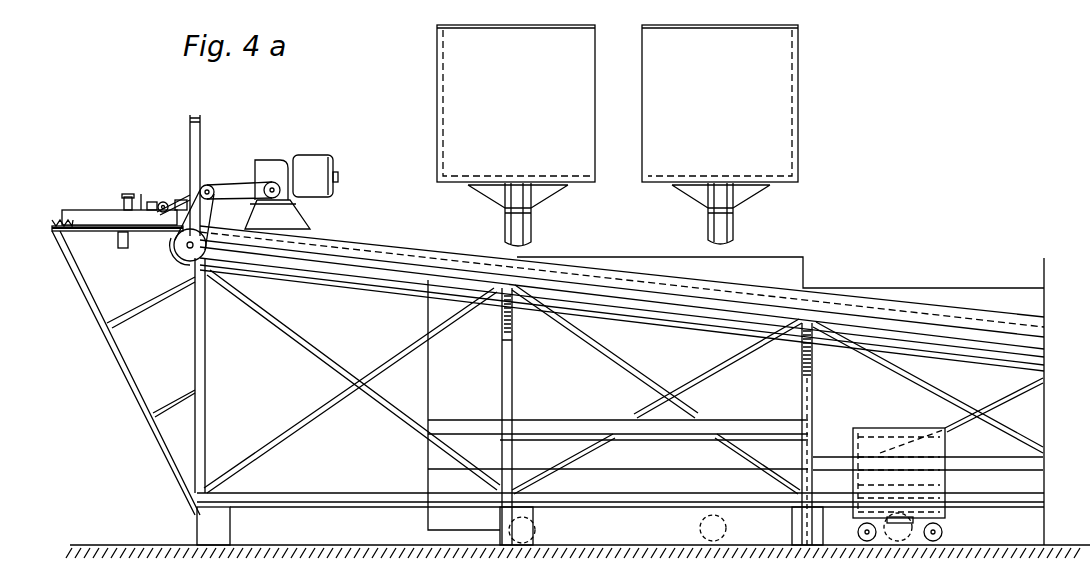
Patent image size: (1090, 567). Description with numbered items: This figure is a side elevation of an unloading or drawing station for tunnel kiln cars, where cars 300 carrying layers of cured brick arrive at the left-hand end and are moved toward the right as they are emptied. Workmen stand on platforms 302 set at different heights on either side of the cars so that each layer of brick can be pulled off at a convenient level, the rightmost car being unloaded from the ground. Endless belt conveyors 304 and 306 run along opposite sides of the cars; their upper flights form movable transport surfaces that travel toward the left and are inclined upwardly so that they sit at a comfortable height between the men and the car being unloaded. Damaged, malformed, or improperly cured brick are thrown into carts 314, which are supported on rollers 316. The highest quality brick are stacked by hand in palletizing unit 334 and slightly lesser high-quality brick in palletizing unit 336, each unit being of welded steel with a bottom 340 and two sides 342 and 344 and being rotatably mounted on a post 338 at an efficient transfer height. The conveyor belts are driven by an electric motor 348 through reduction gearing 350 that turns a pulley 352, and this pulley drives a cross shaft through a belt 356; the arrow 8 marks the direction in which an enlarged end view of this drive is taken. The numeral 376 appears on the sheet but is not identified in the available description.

The arrow 8 is at (67, 372).
The tunnel kiln car 300 is at (640, 533).
The platform 302 is at (437, 432).
The conveyor 304 is at (1069, 562).
The conveyor 306 is at (377, 249).
The cart 314 is at (946, 476).
The roller 316 is at (942, 526).
The palletizing unit 334 is at (437, 87).
The palletizing unit 336 is at (800, 86).
The post 338 is at (531, 232).
The bottom 340 is at (541, 175).
The side 342 is at (440, 46).
The side 344 is at (535, 76).
The electric motor 348 is at (312, 156).
The reduction gearing 350 is at (267, 160).
The pulley 352 is at (297, 200).
The belt 356 is at (238, 183).
The frame member 376 is at (1027, 562).